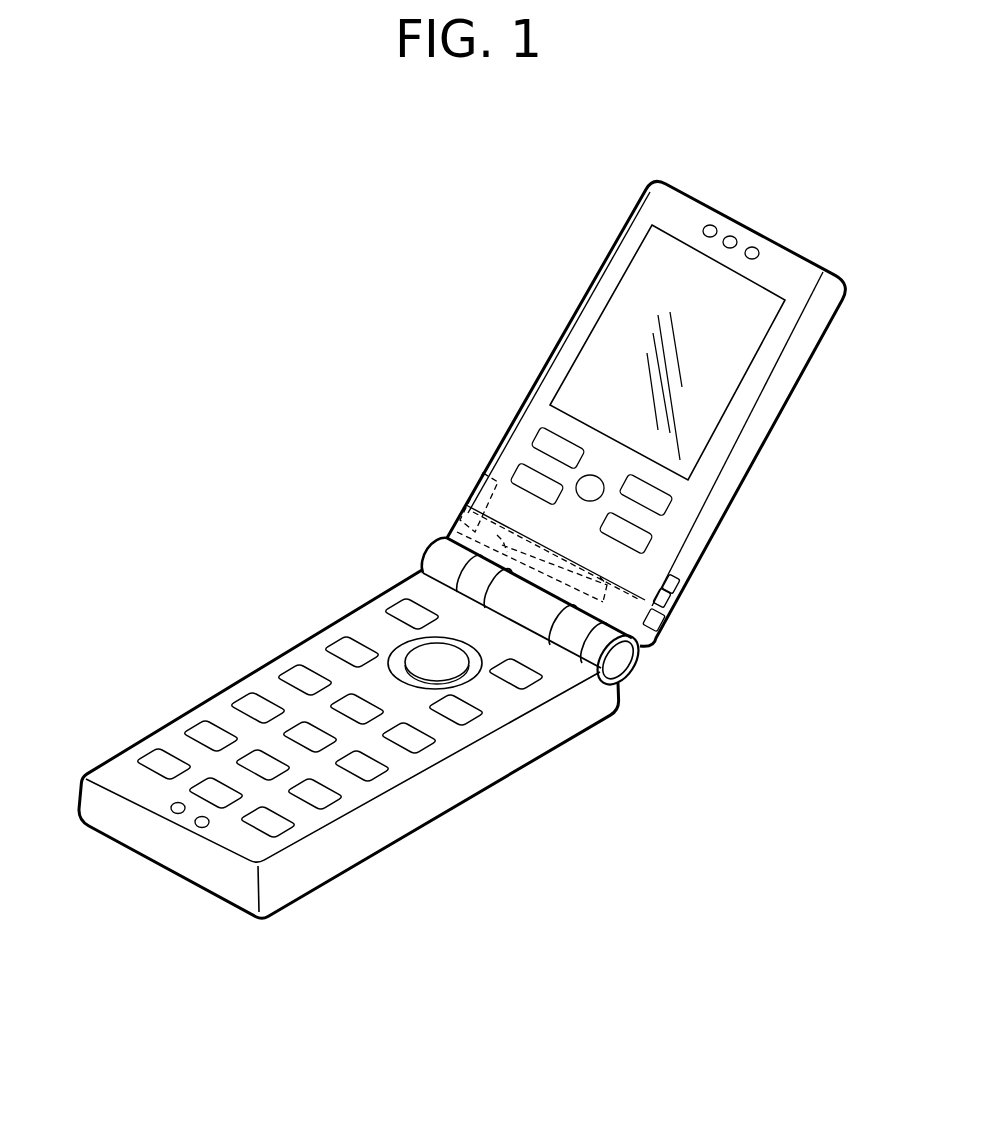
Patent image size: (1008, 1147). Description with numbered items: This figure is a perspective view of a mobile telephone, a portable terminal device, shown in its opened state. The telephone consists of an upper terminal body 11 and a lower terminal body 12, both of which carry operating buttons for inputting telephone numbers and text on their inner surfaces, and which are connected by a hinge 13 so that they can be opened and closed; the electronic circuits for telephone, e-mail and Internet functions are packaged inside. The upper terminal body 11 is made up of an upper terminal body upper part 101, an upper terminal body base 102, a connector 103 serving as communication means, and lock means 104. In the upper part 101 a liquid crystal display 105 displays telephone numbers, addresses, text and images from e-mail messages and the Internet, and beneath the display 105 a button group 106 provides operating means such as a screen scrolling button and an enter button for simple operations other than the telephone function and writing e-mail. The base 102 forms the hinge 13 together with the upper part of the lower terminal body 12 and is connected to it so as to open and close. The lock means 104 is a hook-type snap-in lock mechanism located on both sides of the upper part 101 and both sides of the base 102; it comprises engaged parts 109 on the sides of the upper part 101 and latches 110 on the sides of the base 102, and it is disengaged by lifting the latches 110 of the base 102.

The upper terminal body 11 is at (693, 205).
The lower terminal body 12 is at (503, 760).
The hinge 13 is at (622, 662).
The upper terminal body upper part 101 is at (757, 435).
The upper terminal body base 102 is at (457, 510).
The connector 103 is at (450, 530).
The lock means 104 is at (495, 478).
The liquid crystal display 105 is at (636, 281).
The button group 106 is at (542, 427).
The engaged parts 109 is at (680, 587).
The latches 110 is at (663, 615).